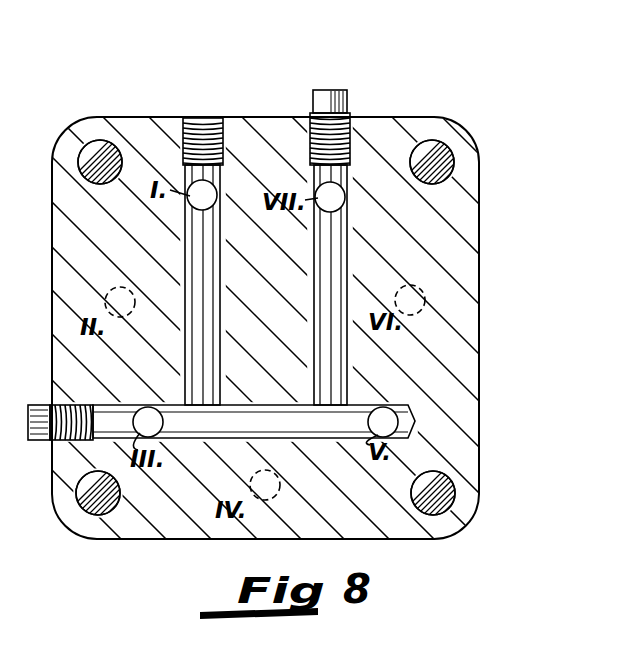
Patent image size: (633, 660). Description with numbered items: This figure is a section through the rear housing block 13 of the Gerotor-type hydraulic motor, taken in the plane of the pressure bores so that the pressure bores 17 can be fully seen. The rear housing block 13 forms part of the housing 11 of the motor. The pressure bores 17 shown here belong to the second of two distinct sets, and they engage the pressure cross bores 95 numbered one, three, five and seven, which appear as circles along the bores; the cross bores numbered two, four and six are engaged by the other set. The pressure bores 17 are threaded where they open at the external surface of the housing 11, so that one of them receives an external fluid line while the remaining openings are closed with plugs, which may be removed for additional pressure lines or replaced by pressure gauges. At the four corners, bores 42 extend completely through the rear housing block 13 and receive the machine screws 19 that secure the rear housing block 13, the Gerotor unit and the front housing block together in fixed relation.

The housing 11 is at (447, 103).
The rear housing block 13 is at (402, 154).
The pressure bores 17 is at (223, 125).
The machine screws 19 is at (443, 170).
The bores 42 is at (444, 178).
The pressure cross bores 95 is at (210, 186).